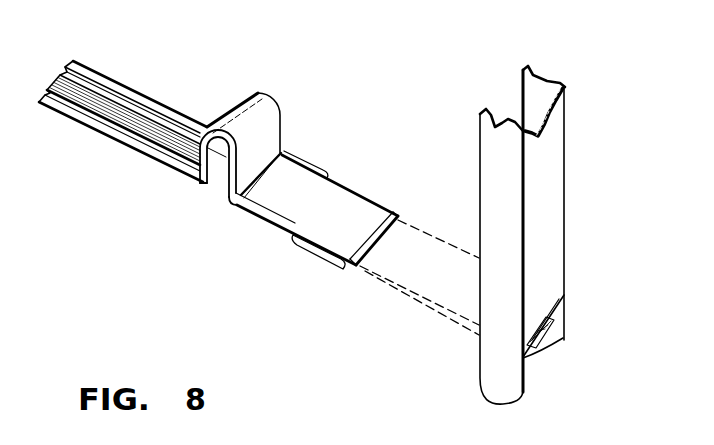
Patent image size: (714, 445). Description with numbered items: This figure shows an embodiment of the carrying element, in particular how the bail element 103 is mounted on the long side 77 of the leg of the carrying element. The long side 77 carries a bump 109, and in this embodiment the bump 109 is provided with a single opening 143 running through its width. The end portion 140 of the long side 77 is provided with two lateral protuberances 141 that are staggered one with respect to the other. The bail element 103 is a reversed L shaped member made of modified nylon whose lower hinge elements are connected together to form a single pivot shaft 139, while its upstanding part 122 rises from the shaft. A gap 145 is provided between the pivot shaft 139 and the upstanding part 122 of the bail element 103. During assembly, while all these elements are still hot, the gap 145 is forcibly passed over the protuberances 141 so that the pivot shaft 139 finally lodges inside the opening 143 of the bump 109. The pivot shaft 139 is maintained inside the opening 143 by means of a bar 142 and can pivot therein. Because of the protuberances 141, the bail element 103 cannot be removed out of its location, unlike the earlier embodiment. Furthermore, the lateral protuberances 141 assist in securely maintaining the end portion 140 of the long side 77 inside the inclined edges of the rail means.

The long side of the leg 77 is at (125, 153).
The bump 109 is at (247, 100).
The bar 142 is at (197, 180).
The opening 143 is at (218, 181).
The end portion of the long side of the leg 140 is at (347, 204).
The lateral protuberances 141 is at (312, 164).
The bail element 103 is at (563, 235).
The upstanding part of the bail element 122 is at (560, 168).
The gap 145 is at (558, 312).
The pivot shaft 139 is at (532, 350).